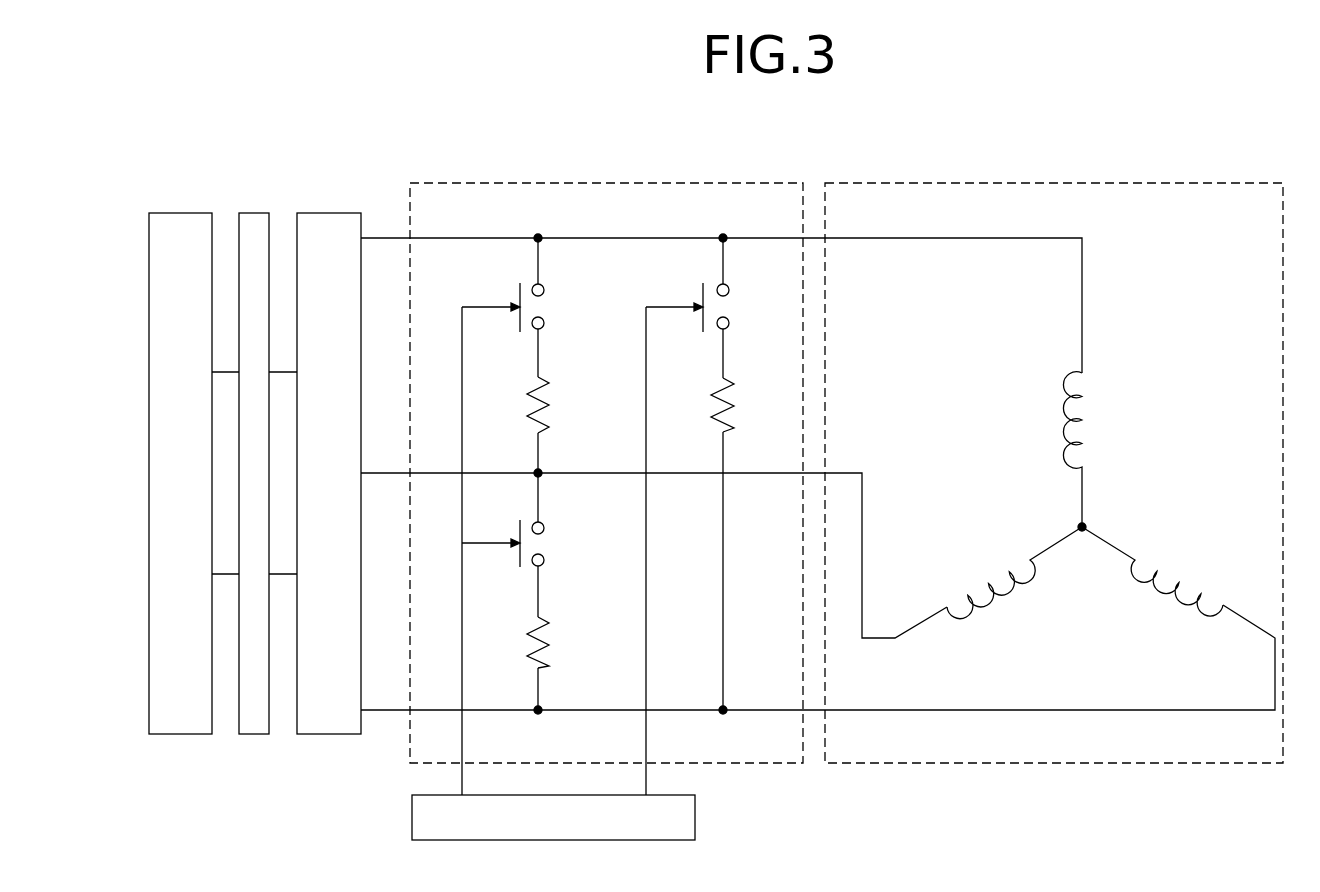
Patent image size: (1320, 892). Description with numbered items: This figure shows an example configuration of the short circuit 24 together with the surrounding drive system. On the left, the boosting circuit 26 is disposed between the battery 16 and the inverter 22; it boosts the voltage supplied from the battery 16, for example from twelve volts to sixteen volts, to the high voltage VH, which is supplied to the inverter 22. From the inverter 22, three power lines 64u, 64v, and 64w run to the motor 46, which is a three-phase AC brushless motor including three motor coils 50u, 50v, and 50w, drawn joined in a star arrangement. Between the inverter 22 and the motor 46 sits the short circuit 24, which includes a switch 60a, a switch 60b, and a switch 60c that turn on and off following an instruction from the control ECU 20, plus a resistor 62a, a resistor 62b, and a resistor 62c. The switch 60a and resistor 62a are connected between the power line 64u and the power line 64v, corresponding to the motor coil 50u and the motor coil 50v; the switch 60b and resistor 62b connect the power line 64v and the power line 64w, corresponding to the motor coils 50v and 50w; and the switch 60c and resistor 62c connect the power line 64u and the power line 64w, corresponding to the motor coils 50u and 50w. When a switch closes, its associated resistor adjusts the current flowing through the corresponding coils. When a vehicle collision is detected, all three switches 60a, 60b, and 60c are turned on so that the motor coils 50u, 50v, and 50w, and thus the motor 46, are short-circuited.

The battery 16 is at (178, 213).
The boosting circuit 26 is at (257, 213).
The inverter 22 is at (322, 213).
The short circuit 24 is at (648, 182).
The motor 46 is at (1062, 182).
The control ECU 20 is at (412, 815).
The switch 60a is at (547, 308).
The switch 60b is at (547, 545).
The switch 60c is at (732, 308).
The resistor 62a is at (549, 407).
The resistor 62b is at (549, 644).
The resistor 62c is at (734, 411).
The power line 64u is at (915, 239).
The power line 64v is at (865, 515).
The power line 64w is at (1062, 708).
The motor coil 50u is at (1075, 372).
The motor coil 50v is at (947, 618).
The motor coil 50w is at (1225, 600).